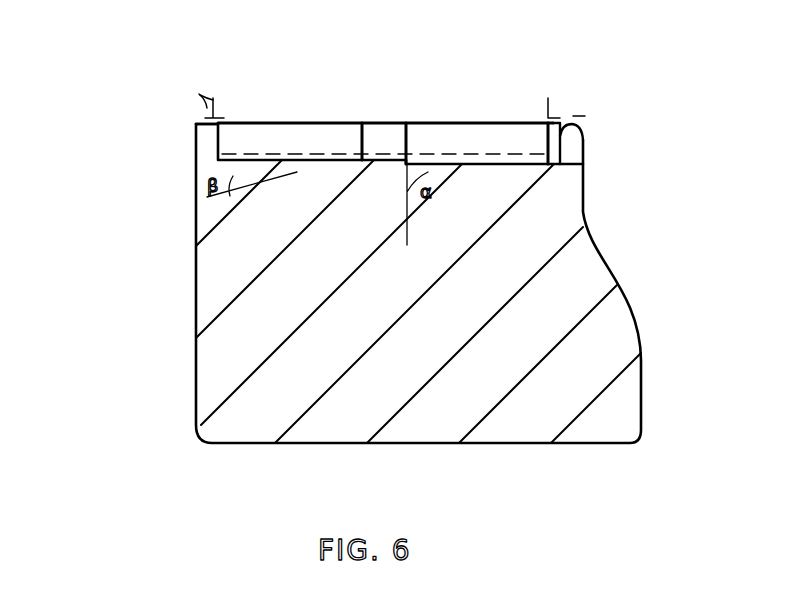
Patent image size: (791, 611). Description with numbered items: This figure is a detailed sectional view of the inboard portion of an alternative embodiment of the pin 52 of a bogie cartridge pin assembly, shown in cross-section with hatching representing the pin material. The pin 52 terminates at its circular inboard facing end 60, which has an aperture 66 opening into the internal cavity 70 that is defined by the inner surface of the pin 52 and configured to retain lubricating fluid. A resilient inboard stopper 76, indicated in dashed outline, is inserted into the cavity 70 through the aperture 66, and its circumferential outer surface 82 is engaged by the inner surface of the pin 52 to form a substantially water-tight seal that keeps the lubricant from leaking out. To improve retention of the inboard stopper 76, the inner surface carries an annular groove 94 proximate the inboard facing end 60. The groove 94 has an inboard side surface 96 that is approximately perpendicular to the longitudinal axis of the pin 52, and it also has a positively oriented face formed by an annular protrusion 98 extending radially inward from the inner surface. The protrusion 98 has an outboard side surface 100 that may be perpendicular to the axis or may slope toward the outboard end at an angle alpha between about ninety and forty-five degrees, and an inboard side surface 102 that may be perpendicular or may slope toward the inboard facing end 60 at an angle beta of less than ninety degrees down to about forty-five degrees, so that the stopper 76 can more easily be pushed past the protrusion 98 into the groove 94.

The cylindrical pin 52 is at (230, 353).
The inboard facing end 60 is at (196, 270).
The aperture 66 is at (205, 114).
The cavity 70 is at (568, 142).
The inboard stopper 76 is at (222, 154).
The circumferential outer surface 82 is at (192, 82).
The annular groove 94 is at (288, 155).
The inboard side surface 96 is at (235, 150).
The annular protrusion 98 is at (381, 153).
The outboard side surface 100 is at (413, 160).
The inboard side surface 102 is at (327, 150).